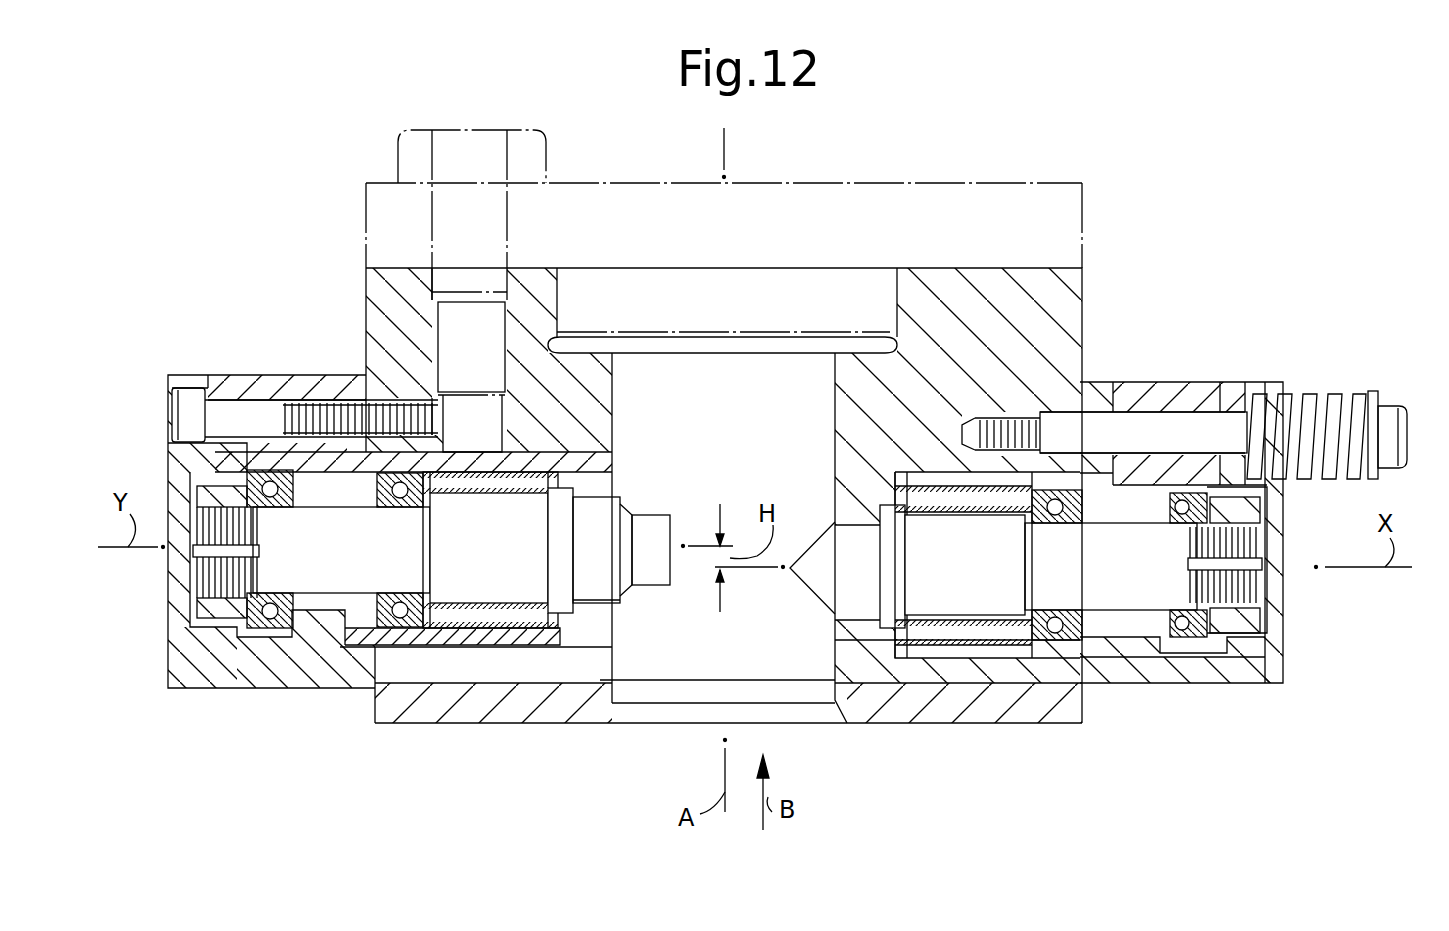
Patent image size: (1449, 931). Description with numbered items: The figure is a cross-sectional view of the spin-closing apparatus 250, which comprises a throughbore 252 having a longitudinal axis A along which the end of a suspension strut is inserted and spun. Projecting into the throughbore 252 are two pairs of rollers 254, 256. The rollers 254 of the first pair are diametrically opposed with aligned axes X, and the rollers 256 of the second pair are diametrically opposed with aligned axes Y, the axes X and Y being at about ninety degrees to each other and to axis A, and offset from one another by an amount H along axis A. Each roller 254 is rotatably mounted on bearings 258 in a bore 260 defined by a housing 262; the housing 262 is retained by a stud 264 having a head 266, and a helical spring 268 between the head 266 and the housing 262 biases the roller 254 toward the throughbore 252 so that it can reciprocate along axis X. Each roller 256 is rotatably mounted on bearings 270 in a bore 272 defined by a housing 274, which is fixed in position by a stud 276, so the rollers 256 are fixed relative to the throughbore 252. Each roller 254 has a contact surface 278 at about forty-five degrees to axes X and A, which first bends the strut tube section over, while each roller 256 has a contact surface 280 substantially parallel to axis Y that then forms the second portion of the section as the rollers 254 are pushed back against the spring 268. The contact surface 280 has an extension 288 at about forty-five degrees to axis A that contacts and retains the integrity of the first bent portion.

The apparatus 250 is at (1128, 284).
The throughbore 252 is at (683, 670).
The rollers of the first pair 254 is at (985, 583).
The rollers of the second pair 256 is at (505, 565).
The bearings 258 is at (1120, 617).
The bore 260 is at (985, 603).
The housing 262 is at (1203, 663).
The stud 264 is at (1163, 427).
The head 266 is at (1393, 412).
The helical spring 268 is at (1345, 410).
The bearings 270 is at (388, 515).
The bore 272 is at (478, 598).
The housing 274 is at (265, 665).
The stud 276 is at (263, 417).
The contact surface 278 is at (812, 598).
The contact surface 280 is at (655, 563).
The extension 288 is at (625, 505).